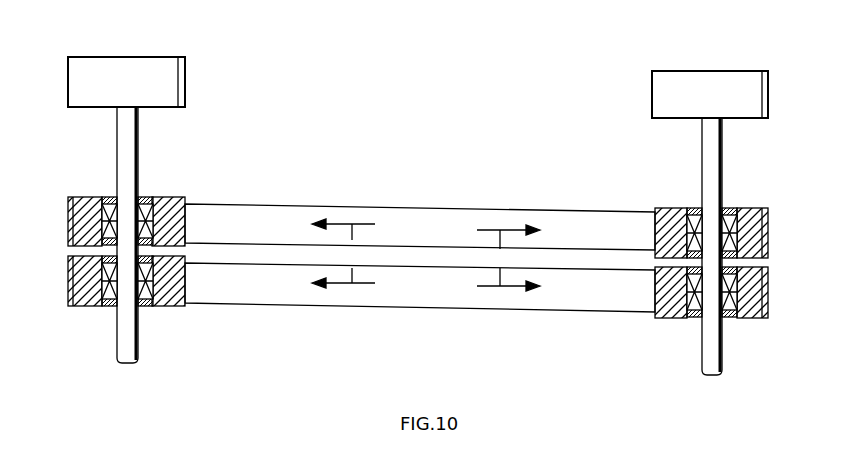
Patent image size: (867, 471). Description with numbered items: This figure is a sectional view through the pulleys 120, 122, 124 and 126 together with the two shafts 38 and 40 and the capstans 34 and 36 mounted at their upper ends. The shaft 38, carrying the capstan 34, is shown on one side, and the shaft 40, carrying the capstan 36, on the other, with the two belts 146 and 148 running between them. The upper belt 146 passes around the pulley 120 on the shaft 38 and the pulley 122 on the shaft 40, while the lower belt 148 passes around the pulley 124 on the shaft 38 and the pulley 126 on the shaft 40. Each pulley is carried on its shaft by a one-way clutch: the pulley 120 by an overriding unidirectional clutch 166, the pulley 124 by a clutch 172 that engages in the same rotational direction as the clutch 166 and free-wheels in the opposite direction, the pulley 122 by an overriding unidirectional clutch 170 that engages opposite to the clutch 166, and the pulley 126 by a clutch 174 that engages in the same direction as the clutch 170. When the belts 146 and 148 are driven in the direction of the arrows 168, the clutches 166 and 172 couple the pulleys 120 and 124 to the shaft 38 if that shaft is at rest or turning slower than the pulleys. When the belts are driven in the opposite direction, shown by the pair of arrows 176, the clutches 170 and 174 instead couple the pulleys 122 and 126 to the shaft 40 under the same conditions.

The capstan 34 is at (700, 75).
The capstan 36 is at (131, 67).
The shaft 38 is at (714, 165).
The shaft 40 is at (128, 156).
The pulley 120 is at (675, 207).
The pulley 122 is at (158, 197).
The pulley 124 is at (676, 320).
The pulley 126 is at (158, 308).
The belt 146 is at (418, 218).
The belt 148 is at (418, 297).
The overriding unidirectional clutch 166 is at (729, 207).
The arrows 168 is at (500, 249).
The overriding unidirectional clutch 170 is at (109, 197).
The clutch 172 is at (728, 320).
The clutch 174 is at (110, 308).
The arrows 176 is at (352, 240).